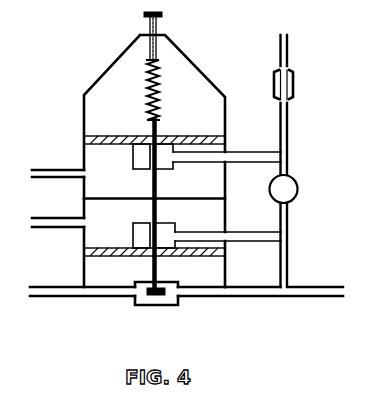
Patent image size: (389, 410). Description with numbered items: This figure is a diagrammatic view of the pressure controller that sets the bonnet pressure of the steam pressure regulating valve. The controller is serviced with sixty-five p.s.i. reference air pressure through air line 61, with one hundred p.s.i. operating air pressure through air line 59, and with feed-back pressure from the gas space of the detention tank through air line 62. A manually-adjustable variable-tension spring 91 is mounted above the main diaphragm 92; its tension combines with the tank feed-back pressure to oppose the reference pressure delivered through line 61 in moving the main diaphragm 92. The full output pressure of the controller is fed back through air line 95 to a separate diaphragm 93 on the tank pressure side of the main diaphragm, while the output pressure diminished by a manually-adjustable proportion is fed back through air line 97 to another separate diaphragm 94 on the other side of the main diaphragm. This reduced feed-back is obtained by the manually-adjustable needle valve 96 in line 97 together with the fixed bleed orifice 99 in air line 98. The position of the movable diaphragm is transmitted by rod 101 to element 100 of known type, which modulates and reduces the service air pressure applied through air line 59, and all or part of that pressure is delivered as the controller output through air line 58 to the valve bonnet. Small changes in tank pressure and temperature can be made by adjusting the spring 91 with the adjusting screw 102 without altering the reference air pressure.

The air line 58 is at (322, 297).
The air line 59 is at (92, 300).
The air line 61 is at (67, 162).
The air line 62 is at (72, 212).
The variable-tension spring 91 is at (158, 97).
The main diaphragm 92 is at (145, 186).
The separate diaphragm 93 is at (165, 214).
The separate diaphragm 94 is at (173, 166).
The air line 95 is at (265, 240).
The needle valve 96 is at (284, 189).
The air line 97 is at (266, 168).
The air line 98 is at (292, 123).
The bleed orifice 99 is at (294, 84).
The element 100 is at (175, 297).
The rod 101 is at (157, 123).
The adjusting screw 102 is at (144, 14).